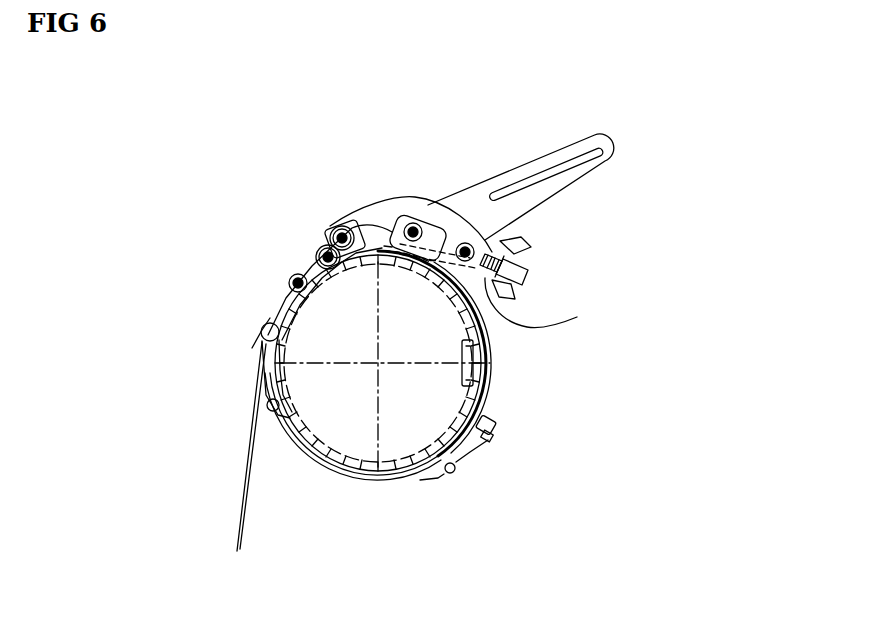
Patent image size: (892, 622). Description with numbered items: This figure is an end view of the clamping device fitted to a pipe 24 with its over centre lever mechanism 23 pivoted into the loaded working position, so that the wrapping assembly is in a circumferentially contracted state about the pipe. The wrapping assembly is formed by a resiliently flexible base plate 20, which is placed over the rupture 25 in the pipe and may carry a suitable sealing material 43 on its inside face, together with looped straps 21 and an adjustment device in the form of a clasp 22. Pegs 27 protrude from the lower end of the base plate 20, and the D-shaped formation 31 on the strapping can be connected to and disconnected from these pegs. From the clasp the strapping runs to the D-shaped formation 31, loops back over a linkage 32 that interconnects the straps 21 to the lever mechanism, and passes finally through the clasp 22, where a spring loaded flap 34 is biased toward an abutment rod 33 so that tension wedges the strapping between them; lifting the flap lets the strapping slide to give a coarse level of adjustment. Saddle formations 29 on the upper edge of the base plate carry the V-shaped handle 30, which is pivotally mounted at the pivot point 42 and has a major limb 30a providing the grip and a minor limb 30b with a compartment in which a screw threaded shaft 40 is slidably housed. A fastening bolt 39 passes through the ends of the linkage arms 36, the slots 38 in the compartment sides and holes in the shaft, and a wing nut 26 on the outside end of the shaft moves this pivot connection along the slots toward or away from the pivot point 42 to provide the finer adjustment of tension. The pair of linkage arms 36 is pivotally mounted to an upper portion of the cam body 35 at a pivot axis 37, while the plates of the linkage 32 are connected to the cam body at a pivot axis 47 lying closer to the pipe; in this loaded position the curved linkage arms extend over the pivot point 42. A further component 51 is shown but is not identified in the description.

The base plate 20 is at (490, 382).
The straps 21 is at (288, 308).
The clasp 22 is at (267, 382).
The over centre lever mechanism 23 is at (565, 251).
The pipe 24 is at (397, 470).
The rupture 25 is at (485, 363).
The wing nut 26 is at (498, 290).
The pegs 27 is at (493, 428).
The saddle formations 29 is at (393, 232).
The handle 30 is at (475, 195).
The major limb 30a is at (508, 173).
The minor limb 30b is at (552, 303).
The D-shaped formation 31 is at (465, 455).
The linkage 32 is at (320, 256).
The abutment rod 33 is at (261, 330).
The spring loaded flap 34 is at (262, 359).
The cam body 35 is at (340, 230).
The linkage arms 36 is at (397, 222).
The pivot axis 37 is at (346, 230).
The slot 38 is at (530, 258).
The fastening bolt 39 is at (476, 249).
The screw threaded shaft 40 is at (528, 272).
The pivot point 42 is at (413, 223).
The sealing material 43 is at (474, 400).
The pivot axis 47 is at (322, 248).
The bolt 51 is at (290, 281).